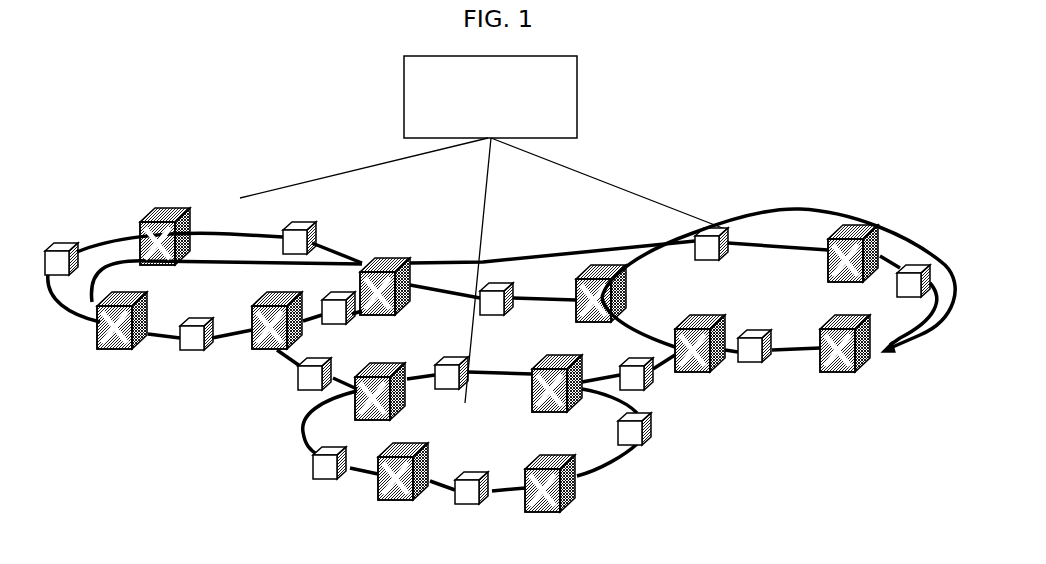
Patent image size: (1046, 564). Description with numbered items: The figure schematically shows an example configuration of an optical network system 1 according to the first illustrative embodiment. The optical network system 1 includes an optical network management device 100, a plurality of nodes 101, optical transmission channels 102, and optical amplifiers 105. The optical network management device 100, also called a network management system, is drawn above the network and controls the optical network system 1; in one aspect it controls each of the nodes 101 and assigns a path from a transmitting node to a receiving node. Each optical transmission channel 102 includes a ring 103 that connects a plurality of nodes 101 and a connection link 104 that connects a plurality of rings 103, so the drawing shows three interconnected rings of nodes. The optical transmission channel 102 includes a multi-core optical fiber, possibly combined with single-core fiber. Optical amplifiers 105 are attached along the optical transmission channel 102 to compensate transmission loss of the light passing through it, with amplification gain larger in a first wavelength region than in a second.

The optical network system 1 is at (500, 293).
The optical network management device 100 is at (405, 110).
The node 101 is at (140, 215).
The optical transmission channel 102 is at (222, 233).
The ring 103 is at (612, 464).
The connection link 104 is at (537, 290).
The optical amplifier 105 is at (197, 350).